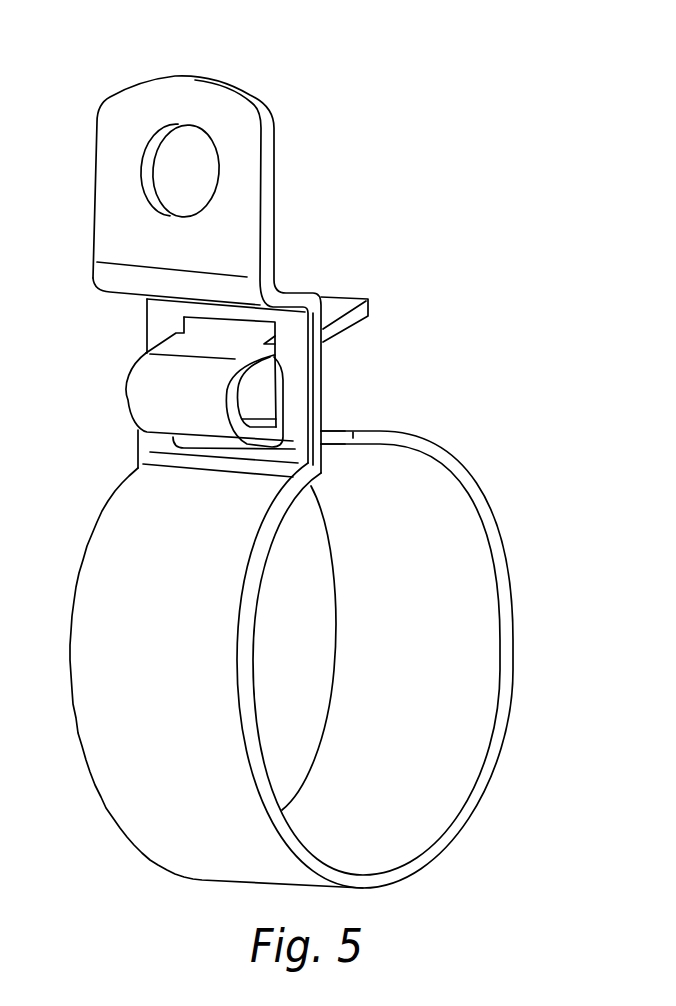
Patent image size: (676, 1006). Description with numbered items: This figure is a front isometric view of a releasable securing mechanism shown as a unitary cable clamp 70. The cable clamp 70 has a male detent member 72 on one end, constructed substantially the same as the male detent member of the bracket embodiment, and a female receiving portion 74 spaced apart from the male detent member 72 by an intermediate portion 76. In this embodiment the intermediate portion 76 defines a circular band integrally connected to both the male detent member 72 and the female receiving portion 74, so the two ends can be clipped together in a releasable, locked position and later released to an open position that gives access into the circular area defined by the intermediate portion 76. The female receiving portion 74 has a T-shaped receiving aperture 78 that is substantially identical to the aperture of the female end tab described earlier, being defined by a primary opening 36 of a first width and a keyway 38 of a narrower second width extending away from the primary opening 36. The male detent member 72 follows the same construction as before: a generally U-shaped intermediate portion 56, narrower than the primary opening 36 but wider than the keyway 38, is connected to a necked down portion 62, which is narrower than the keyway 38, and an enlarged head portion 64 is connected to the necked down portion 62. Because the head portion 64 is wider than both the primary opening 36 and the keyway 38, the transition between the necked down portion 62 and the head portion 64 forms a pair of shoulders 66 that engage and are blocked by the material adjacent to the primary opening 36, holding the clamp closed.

The cable clamp 70 is at (410, 70).
The keyway 38 is at (200, 316).
The necked down portion 62 is at (188, 348).
The head portion 64 is at (352, 320).
The male detent member 72 is at (167, 386).
The female receiving portion 74 is at (303, 351).
The T-shaped receiving aperture 78 is at (283, 388).
The primary opening 36 is at (272, 409).
The U-shaped intermediate portion 56 is at (143, 417).
The shoulders 66 is at (337, 442).
The intermediate portion 76 is at (478, 562).